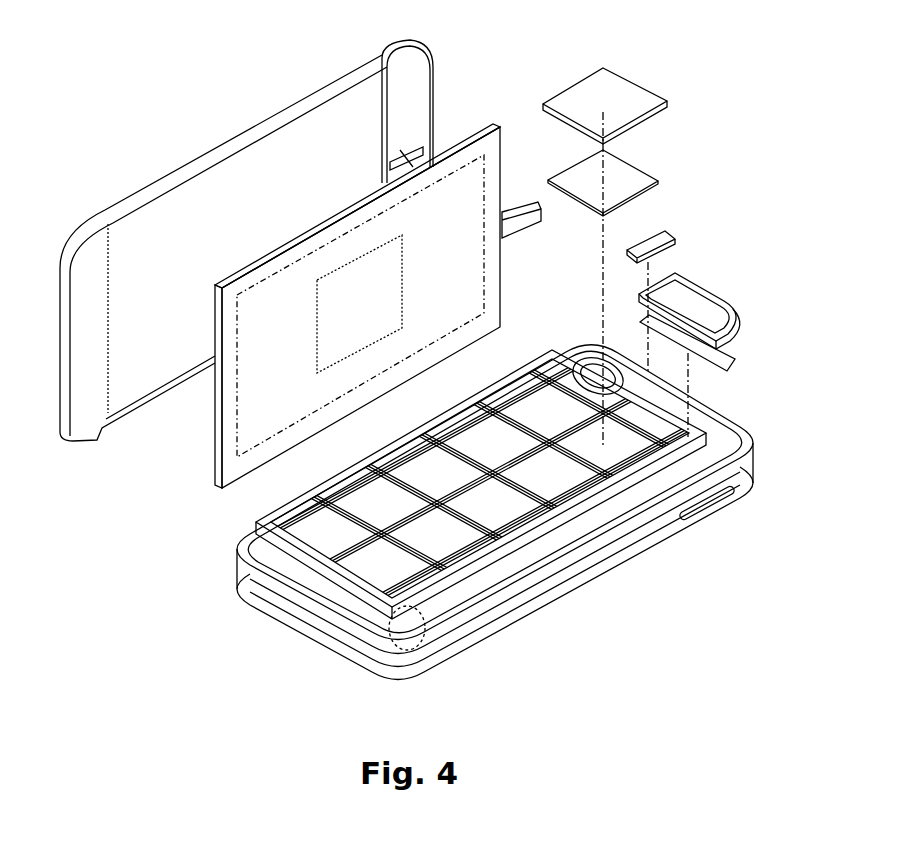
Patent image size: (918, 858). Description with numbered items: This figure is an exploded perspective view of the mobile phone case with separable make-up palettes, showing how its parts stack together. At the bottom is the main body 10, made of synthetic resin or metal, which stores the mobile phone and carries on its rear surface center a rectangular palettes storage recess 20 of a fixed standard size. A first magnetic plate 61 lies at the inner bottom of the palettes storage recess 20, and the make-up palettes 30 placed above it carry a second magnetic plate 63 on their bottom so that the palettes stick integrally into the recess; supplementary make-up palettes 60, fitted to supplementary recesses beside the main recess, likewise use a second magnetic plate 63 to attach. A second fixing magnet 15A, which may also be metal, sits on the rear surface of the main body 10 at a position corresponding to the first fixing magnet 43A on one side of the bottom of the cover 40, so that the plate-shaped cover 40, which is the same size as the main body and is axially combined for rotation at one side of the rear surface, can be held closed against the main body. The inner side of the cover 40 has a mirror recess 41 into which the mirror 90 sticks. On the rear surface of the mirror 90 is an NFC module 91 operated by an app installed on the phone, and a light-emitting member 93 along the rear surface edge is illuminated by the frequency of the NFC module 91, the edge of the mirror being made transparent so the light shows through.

The main body 10 is at (580, 582).
The palettes storage recess 20 is at (607, 386).
The make-up palettes 30 is at (633, 83).
The second magnetic plate 63 is at (632, 174).
The second fixing magnet 15A is at (663, 234).
The supplementary make-up palettes 60 is at (698, 303).
The first magnetic plate 61 is at (697, 522).
The cover 40 is at (415, 63).
The mirror recess 41 is at (380, 88).
The first fixing magnet 43A is at (513, 208).
The mirror 90 is at (478, 273).
The NFC module 91 is at (362, 333).
The light-emitting member 93 is at (475, 134).